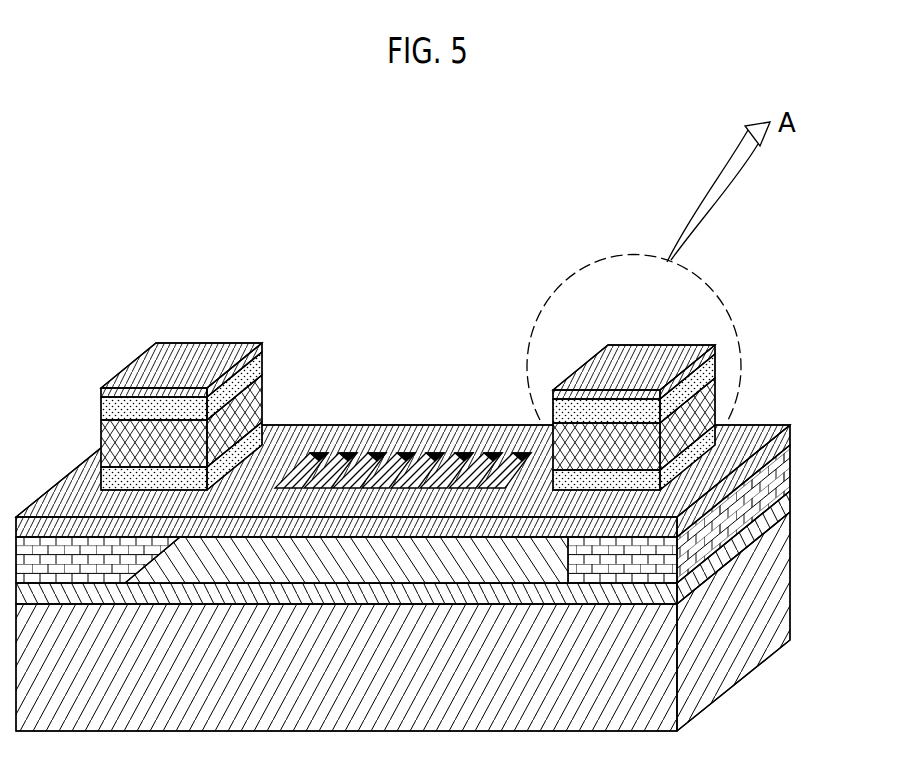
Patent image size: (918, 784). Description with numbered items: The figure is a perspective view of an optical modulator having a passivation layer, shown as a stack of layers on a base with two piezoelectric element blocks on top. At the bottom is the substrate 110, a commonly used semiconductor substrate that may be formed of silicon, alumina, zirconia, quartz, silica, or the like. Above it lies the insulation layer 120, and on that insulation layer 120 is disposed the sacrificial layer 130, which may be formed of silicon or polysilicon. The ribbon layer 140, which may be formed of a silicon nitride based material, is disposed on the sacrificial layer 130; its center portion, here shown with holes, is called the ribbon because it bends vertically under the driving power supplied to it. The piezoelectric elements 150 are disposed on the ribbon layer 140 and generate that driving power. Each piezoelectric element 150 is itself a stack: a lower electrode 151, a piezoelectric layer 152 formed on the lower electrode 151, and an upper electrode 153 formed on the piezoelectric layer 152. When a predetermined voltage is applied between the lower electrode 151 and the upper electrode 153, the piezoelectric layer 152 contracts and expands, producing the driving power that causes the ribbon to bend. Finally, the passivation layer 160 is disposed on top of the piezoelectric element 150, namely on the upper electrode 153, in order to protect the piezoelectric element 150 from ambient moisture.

The substrate 110 is at (792, 594).
The insulation layer 120 is at (792, 510).
The sacrificial layer 130 is at (792, 473).
The ribbon layer 140 is at (792, 434).
The piezoelectric element 150 is at (482, 392).
The lower electrode 151 is at (730, 418).
The piezoelectric layer 152 is at (718, 392).
The upper electrode 153 is at (718, 361).
The passivation layer 160 is at (674, 347).